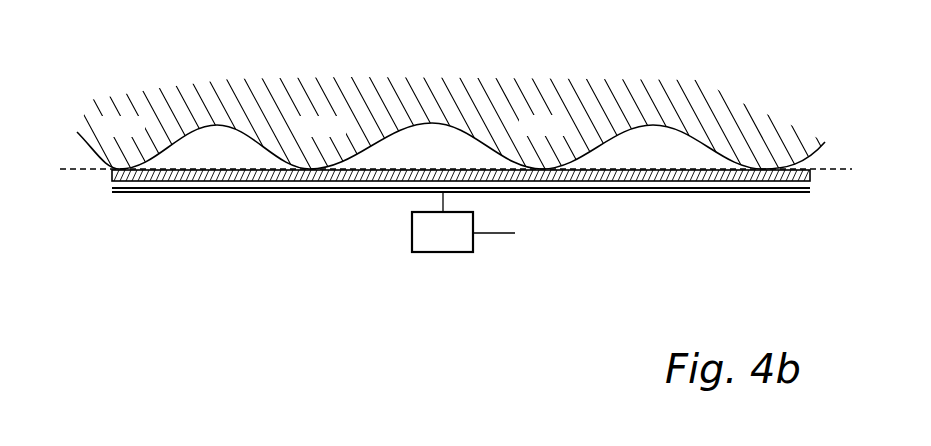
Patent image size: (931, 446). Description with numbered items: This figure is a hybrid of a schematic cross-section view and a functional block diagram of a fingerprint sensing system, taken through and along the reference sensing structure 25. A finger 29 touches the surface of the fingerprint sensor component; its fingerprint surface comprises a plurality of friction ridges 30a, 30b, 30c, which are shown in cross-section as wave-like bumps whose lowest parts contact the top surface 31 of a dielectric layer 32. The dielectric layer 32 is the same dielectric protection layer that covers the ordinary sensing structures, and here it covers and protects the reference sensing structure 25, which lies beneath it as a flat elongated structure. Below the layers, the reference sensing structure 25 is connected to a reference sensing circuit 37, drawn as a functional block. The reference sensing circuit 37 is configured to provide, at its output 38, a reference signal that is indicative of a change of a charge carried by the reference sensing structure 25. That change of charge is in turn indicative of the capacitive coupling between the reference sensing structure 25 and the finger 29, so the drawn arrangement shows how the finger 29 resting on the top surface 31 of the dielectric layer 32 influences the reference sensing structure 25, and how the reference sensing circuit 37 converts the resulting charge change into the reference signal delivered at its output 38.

The reference sensing structure 25 is at (628, 186).
The finger 29 is at (445, 59).
The friction ridge 30a is at (143, 139).
The friction ridge 30b is at (344, 139).
The friction ridge 30c is at (563, 139).
The top surface 31 is at (222, 170).
The dielectric layer 32 is at (112, 173).
The reference sensing circuit 37 is at (418, 237).
The output 38 is at (494, 234).